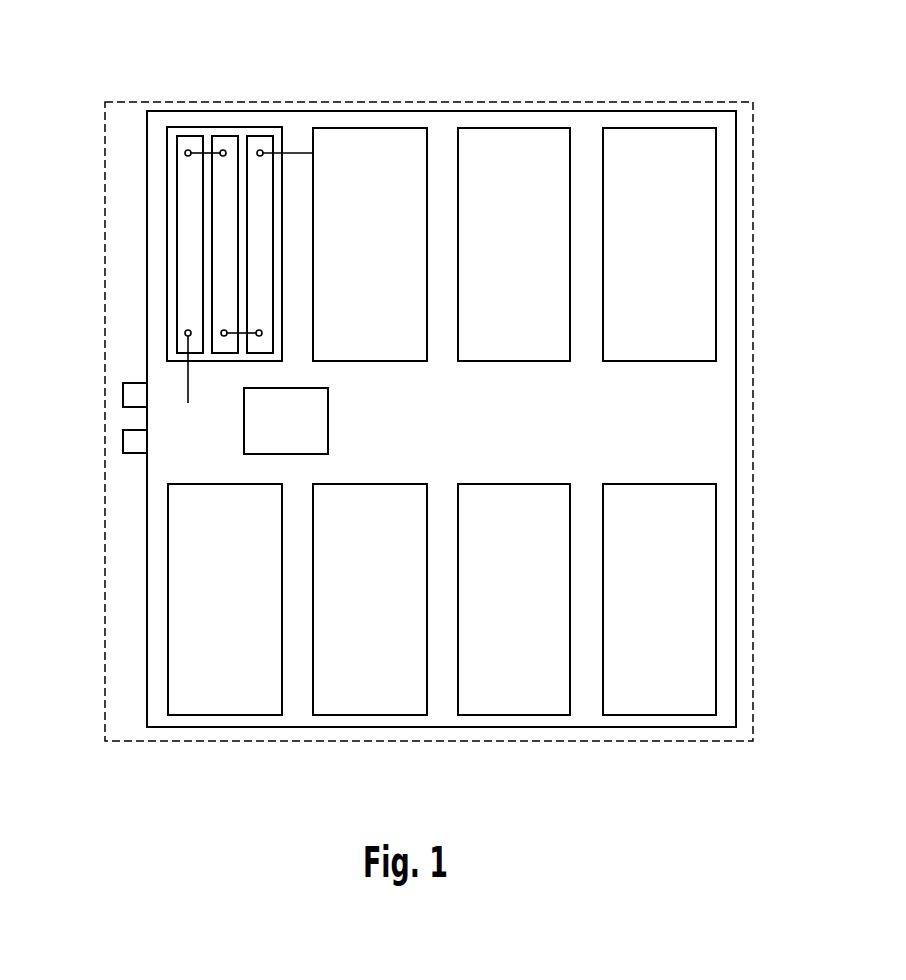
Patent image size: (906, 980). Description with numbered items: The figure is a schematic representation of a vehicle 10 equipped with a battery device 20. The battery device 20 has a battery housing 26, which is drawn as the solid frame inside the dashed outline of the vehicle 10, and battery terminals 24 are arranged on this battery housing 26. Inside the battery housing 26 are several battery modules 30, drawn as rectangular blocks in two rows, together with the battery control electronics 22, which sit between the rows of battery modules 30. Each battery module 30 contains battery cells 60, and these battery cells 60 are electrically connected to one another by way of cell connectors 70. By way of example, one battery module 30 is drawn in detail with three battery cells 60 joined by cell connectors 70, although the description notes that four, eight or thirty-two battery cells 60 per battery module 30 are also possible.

The vehicle 10 is at (125, 97).
The battery device 20 is at (300, 106).
The battery control electronics 22 is at (315, 421).
The battery terminals 24 is at (130, 395).
The battery housing 26 is at (740, 320).
The battery modules 30 is at (442, 503).
The battery cells 60 is at (257, 260).
The cell connectors 70 is at (195, 149).